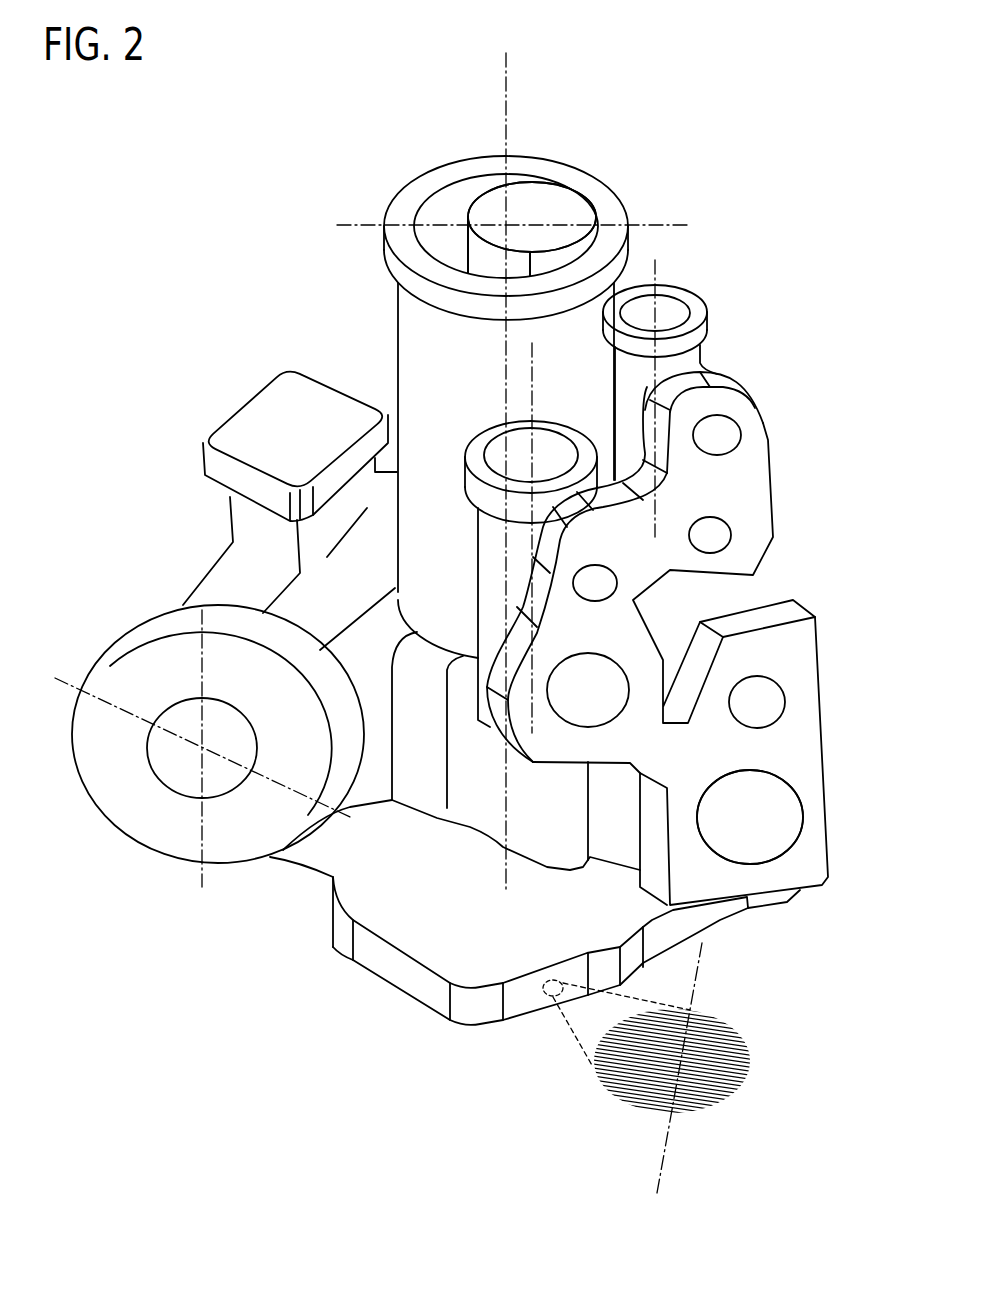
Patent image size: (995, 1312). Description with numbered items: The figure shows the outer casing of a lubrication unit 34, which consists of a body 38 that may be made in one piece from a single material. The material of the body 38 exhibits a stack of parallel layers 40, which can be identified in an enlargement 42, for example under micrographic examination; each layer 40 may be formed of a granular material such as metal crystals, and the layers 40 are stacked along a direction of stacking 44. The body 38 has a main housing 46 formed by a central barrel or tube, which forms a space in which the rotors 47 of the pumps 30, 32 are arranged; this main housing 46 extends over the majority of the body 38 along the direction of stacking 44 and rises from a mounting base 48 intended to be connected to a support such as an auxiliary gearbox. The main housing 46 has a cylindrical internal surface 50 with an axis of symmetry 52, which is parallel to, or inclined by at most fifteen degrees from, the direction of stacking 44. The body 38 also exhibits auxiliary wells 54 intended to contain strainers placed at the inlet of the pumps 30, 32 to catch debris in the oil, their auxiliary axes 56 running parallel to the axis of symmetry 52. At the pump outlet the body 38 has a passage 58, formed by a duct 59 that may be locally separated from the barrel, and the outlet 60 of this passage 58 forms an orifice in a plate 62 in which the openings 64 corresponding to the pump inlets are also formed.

The pump 30 is at (568, 210).
The pump 32 is at (499, 246).
The lubrication unit 34 is at (206, 268).
The body 38 is at (272, 1032).
The layers 40 is at (720, 1020).
The enlargement 42 is at (578, 1070).
The direction of stacking 44 is at (666, 1150).
The main housing 46 is at (463, 254).
The rotors 47 is at (553, 221).
The mounting base 48 is at (439, 926).
The internal surface 50 is at (440, 203).
The axis of symmetry 52 is at (503, 97).
The auxiliary wells 54 is at (667, 316).
The auxiliary axes 56 is at (533, 397).
The passage 58 is at (746, 848).
The duct 59 is at (731, 799).
The outlet 60 is at (771, 834).
The plate 62 is at (733, 382).
The openings 64 is at (705, 446).